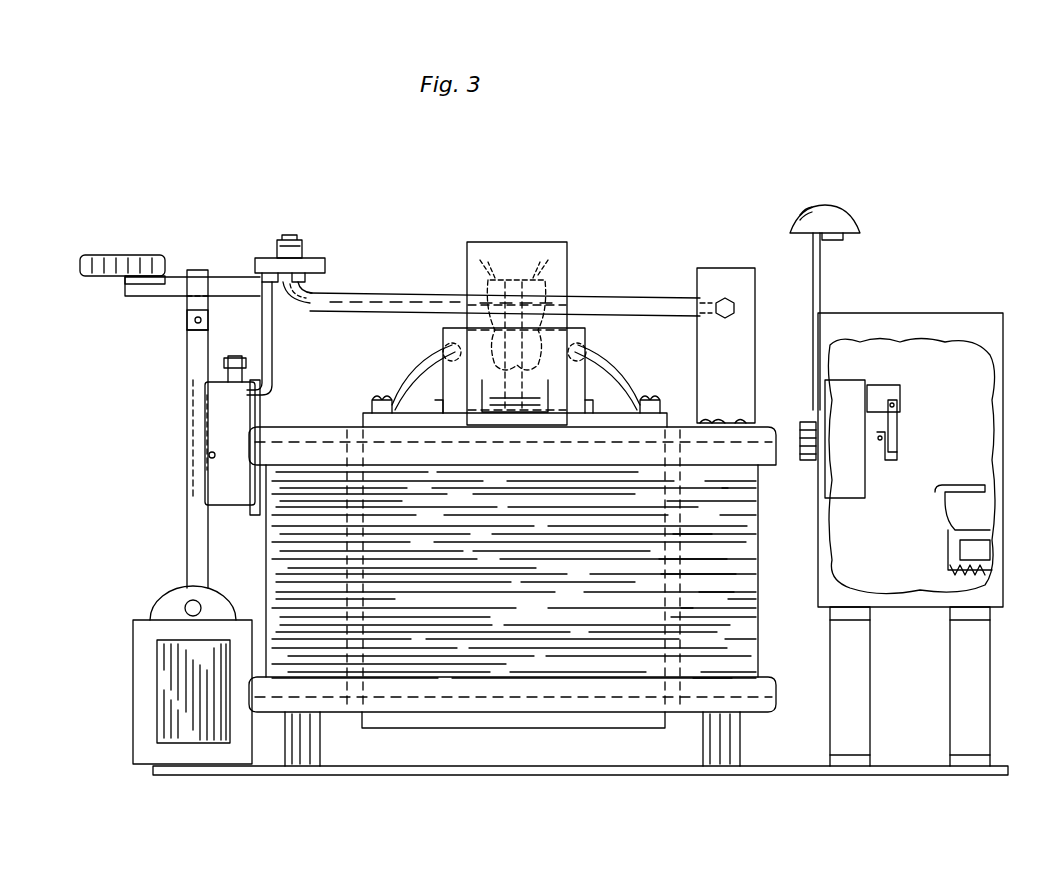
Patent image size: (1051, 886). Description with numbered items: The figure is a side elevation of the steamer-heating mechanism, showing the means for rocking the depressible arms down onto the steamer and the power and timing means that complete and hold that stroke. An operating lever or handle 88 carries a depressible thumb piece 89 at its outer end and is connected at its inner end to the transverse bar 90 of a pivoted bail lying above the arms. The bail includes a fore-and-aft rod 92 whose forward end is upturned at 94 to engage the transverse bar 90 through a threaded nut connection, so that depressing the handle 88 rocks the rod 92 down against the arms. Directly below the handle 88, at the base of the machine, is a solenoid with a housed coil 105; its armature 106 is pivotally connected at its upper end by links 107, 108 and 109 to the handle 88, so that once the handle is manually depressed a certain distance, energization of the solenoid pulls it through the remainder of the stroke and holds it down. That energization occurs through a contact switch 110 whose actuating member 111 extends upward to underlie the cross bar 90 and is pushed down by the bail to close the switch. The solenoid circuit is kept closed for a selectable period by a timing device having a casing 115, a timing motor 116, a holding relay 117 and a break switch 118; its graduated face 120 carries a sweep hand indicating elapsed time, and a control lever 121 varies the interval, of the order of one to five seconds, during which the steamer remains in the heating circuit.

The operating lever or handle 88 is at (219, 277).
The depressible thumb piece 89 is at (108, 258).
The transverse bar 90 is at (323, 263).
The fore-and-aft rod 92 is at (592, 296).
The upturned end 94 is at (297, 276).
The coil 105 is at (146, 712).
The armature 106 is at (165, 598).
The link 107 is at (188, 555).
The link 108 is at (190, 375).
The link 109 is at (190, 303).
The contact switch 110 is at (222, 420).
The actuating member 111 is at (272, 354).
The casing 115 is at (938, 318).
The timing motor 116 is at (856, 466).
The holding relay 117 is at (955, 552).
The break switch 118 is at (898, 418).
The face 120 is at (808, 462).
The control lever 121 is at (820, 287).